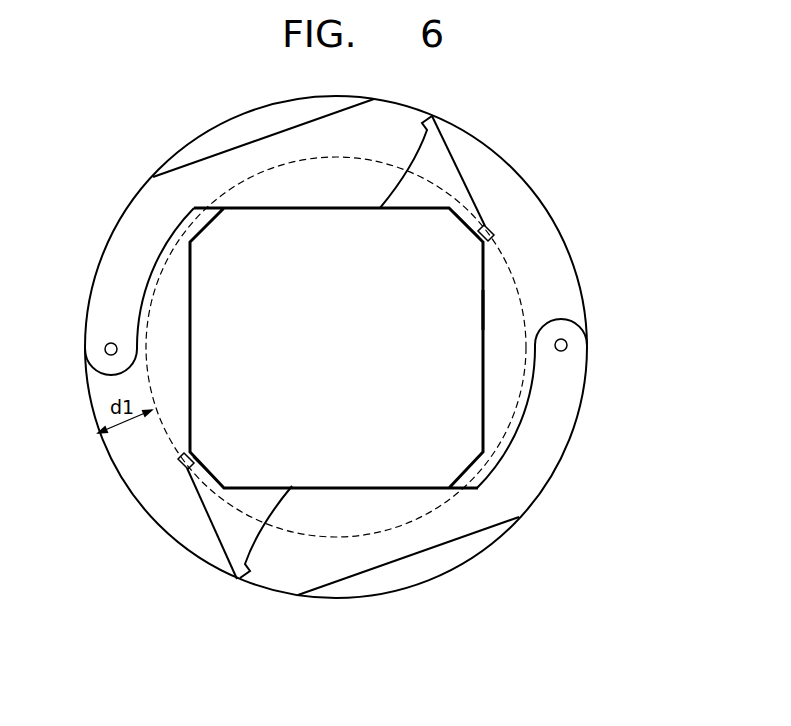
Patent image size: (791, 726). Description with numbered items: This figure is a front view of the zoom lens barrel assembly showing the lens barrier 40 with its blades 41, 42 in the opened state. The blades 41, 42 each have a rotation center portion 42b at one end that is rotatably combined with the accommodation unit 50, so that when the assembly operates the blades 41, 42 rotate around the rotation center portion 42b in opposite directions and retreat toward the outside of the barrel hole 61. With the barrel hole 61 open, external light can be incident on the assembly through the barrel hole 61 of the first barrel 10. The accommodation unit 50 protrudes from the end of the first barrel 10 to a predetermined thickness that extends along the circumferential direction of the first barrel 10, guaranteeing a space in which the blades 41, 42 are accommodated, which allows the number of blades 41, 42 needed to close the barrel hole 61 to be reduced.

The first barrel 10 is at (512, 270).
The lens barrier 40 is at (359, 347).
The blade 41 is at (217, 510).
The blade 42 is at (383, 457).
The rotation center portion 42b is at (567, 347).
The accommodation unit 50 is at (510, 180).
The barrel hole 61 is at (481, 296).